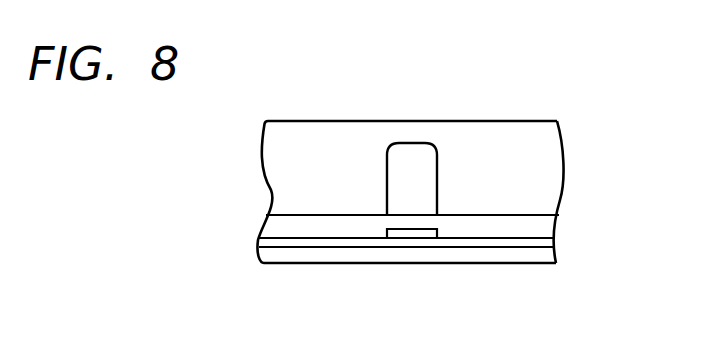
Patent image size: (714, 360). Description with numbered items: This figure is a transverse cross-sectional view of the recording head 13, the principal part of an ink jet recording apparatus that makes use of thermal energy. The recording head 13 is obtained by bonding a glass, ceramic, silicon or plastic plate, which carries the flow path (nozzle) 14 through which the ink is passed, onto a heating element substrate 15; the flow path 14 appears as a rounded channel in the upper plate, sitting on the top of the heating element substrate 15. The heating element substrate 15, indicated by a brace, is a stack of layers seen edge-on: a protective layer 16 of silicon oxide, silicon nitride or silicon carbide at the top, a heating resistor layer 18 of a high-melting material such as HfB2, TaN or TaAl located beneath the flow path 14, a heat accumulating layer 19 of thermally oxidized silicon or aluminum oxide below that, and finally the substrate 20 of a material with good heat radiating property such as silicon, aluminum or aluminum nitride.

The recording head 13 is at (316, 121).
The flow path (nozzle) 14 is at (412, 143).
The heating element substrate 15 is at (563, 215).
The protective layer 16 is at (342, 222).
The heating resistor layer 18 is at (415, 235).
The heat accumulating layer 19 is at (458, 243).
The substrate 20 is at (512, 253).